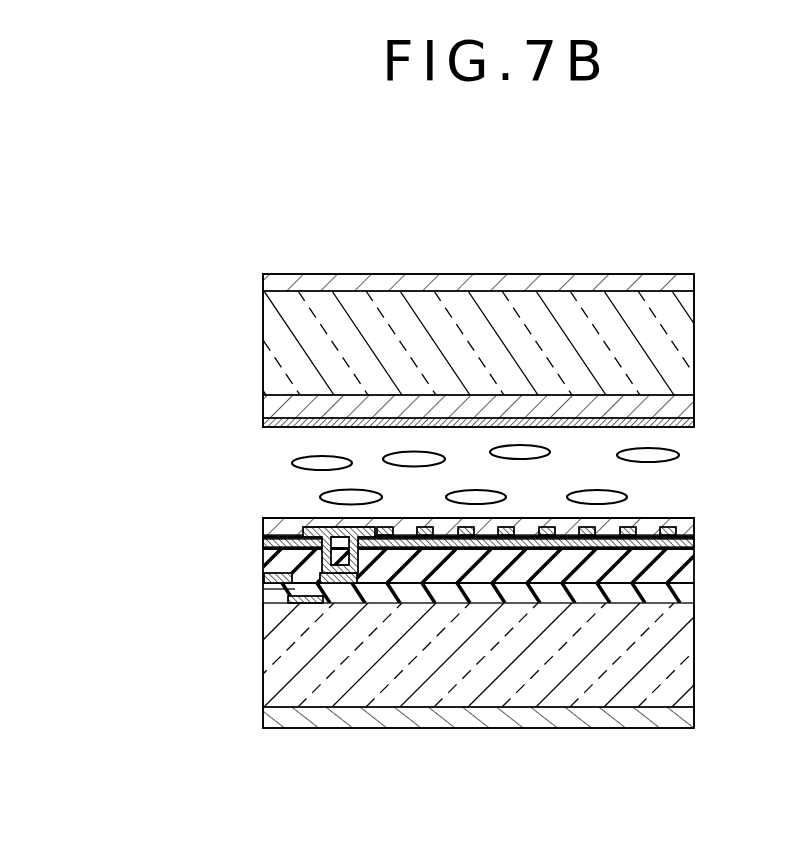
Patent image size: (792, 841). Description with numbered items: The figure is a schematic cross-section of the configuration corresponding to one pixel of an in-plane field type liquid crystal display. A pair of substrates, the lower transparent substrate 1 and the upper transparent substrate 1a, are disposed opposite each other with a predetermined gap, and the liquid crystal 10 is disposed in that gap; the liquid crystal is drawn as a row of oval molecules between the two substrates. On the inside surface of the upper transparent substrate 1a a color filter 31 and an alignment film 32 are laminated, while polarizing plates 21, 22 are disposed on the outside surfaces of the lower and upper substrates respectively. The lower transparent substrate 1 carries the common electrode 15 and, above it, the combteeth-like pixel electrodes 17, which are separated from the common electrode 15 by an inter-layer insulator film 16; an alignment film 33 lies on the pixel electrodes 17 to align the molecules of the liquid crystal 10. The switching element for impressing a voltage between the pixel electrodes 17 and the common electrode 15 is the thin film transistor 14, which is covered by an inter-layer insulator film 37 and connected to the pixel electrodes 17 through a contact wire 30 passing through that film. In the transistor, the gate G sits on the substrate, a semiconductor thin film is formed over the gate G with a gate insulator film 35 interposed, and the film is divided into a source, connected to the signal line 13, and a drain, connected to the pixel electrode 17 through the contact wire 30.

The polarizing plate 22 is at (695, 284).
The upper transparent substrate 1a is at (265, 338).
The color filter 31 is at (266, 407).
The alignment film 32 is at (266, 421).
The liquid crystal 10 is at (656, 490).
The alignment film 33 is at (292, 523).
The pixel electrode 17 is at (265, 527).
The common electrode 15 is at (692, 545).
The inter-layer insulator film 16 is at (265, 545).
The inter-layer insulator film 37 is at (692, 572).
The signal line 13 is at (265, 579).
The thin film transistor 14 is at (318, 590).
The contact wire 30 is at (356, 558).
The gate insulator film 35 is at (265, 592).
The gate G is at (303, 603).
The lower transparent substrate 1 is at (275, 687).
The polarizing plate 21 is at (692, 720).